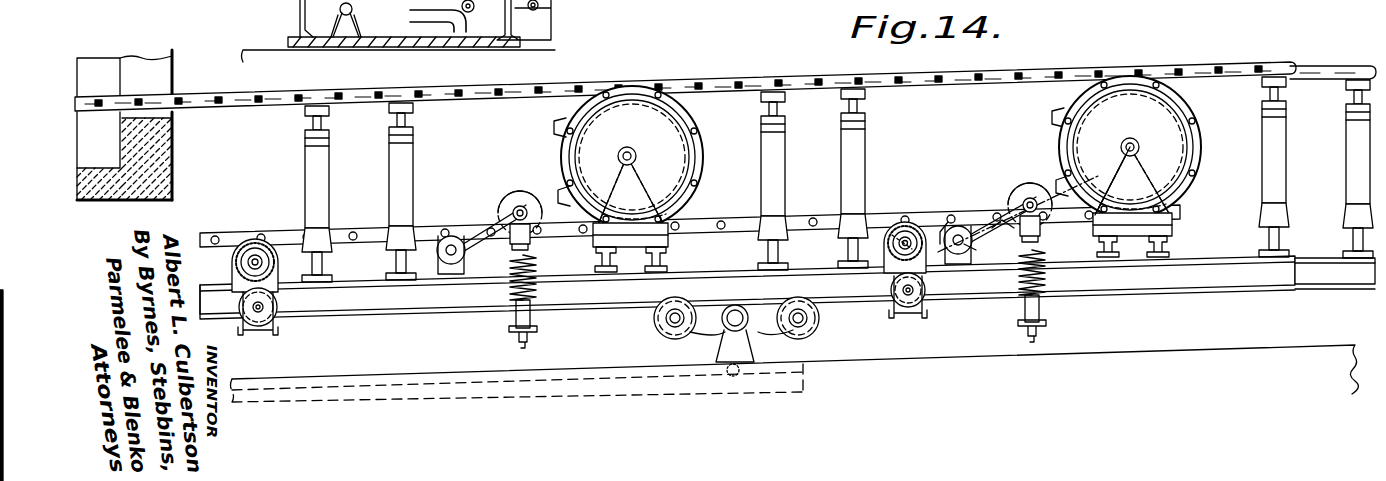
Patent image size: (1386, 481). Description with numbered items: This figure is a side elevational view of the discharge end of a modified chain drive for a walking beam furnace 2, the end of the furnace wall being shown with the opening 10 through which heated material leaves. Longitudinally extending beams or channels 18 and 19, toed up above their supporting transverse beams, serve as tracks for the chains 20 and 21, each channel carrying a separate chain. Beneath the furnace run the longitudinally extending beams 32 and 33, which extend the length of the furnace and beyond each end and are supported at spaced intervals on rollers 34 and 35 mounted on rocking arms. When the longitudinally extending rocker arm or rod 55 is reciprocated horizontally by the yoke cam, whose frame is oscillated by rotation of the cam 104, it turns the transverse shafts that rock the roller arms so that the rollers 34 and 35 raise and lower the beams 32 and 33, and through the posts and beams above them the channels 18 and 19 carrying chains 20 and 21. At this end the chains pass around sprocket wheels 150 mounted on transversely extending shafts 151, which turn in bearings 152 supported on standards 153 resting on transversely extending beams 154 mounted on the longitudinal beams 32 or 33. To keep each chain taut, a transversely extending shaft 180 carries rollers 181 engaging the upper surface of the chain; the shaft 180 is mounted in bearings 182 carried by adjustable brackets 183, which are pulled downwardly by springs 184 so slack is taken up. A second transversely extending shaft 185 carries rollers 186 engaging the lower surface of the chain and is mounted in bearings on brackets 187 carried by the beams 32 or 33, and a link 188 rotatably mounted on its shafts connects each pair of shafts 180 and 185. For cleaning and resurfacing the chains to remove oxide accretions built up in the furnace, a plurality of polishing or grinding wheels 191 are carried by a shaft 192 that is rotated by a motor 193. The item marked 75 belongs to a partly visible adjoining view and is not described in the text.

The furnace 2 is at (150, 143).
The opening at discharge end 10 is at (152, 68).
The longitudinally extending beams or channels 18 is at (477, 94).
The longitudinally extending beams or channels 19 is at (480, 110).
The chain 20 is at (694, 128).
The chain 21 is at (1200, 166).
The longitudinally extending beam 32 is at (1245, 273).
The longitudinally extending beam 33 is at (1326, 273).
The roller 34 is at (654, 320).
The roller 35 is at (820, 320).
The longitudinally extending rocker arm or rod 55 is at (410, 375).
The lever 75 is at (298, 3).
The cam 104 is at (280, 24).
The sprocket wheel 150 is at (558, 148).
The transversely extending shaft 151 is at (629, 148).
The bearing 152 is at (636, 156).
The standard 153 is at (618, 179).
The transversely extending beam 154 is at (607, 255).
The transversely extending shaft 180 is at (1032, 197).
The roller 181 is at (502, 198).
The bearing 182 is at (1000, 190).
The adjustable bracket 183 is at (1084, 186).
The spring 184 is at (535, 266).
The transversely extending shaft 185 is at (962, 258).
The roller 186 is at (954, 210).
The bracket 187 is at (976, 244).
The link 188 is at (1002, 220).
The polishing or grinding wheel 191 is at (255, 228).
The shaft 192 is at (886, 270).
The motor 193 is at (255, 320).